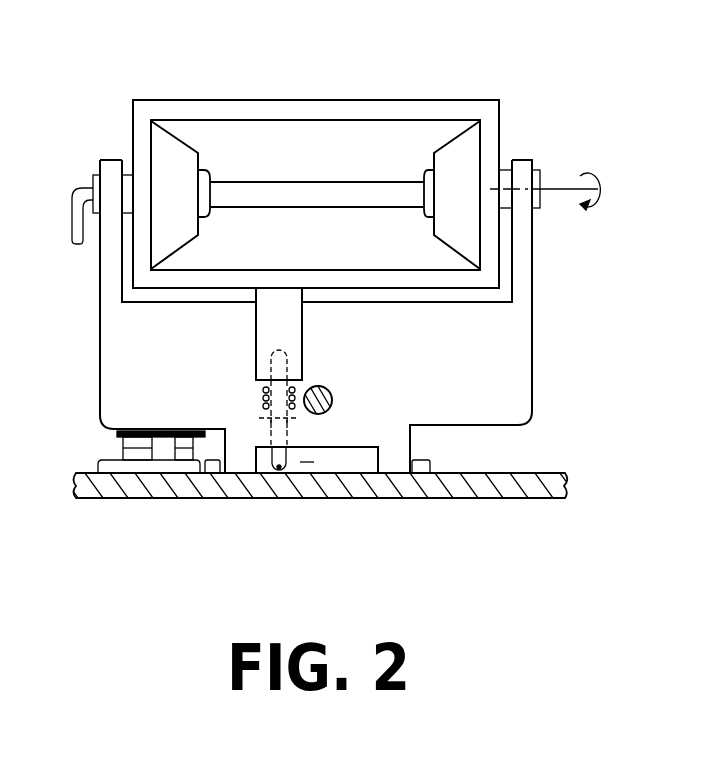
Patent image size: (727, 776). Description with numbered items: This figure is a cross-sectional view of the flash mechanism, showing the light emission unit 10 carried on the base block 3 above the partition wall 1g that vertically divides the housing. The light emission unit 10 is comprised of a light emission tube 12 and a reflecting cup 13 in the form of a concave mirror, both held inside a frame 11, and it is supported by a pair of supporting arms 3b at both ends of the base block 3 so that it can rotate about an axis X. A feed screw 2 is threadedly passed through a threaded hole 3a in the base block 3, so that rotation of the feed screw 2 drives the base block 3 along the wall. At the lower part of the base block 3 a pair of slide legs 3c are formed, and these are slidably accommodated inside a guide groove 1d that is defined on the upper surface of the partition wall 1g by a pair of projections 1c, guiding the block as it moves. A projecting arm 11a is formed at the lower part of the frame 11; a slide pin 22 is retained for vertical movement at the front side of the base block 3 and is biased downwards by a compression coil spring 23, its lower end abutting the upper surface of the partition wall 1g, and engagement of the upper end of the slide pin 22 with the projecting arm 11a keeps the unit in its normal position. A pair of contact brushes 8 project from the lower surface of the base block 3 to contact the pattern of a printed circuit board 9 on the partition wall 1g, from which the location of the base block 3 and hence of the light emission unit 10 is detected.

The projections 1c is at (208, 473).
The guide groove 1d is at (307, 462).
The partition wall 1g is at (527, 497).
The feed screw 2 is at (330, 393).
The base block 3 is at (532, 362).
The threaded hole 3a is at (322, 414).
The supporting arms 3b is at (100, 282).
The slide legs 3c is at (243, 465).
The contact brushes 8 is at (172, 473).
The printed circuit board 9 is at (108, 475).
The light emission unit 10 is at (483, 94).
The frame 11 is at (185, 108).
The projecting arm 11a is at (267, 342).
The light emission tube 12 is at (377, 183).
The reflecting cup 13 is at (305, 135).
The slide pin 22 is at (277, 463).
The compression coil spring 23 is at (267, 402).
The axis X is at (563, 188).